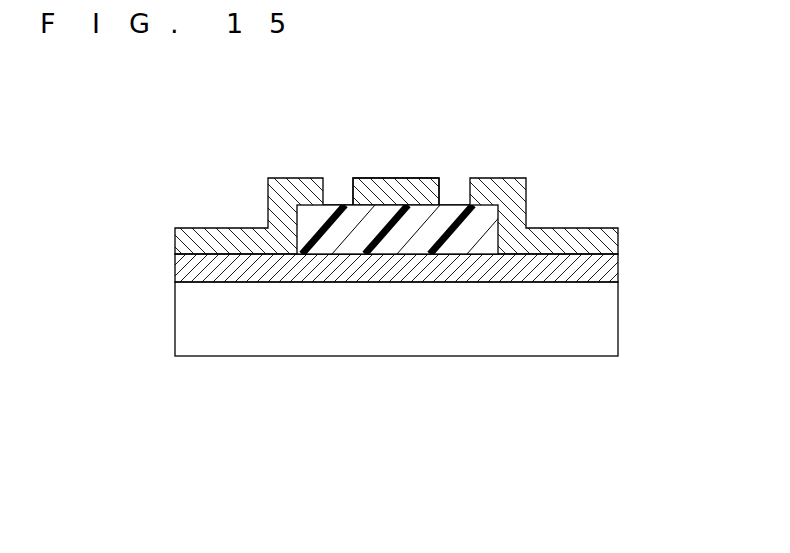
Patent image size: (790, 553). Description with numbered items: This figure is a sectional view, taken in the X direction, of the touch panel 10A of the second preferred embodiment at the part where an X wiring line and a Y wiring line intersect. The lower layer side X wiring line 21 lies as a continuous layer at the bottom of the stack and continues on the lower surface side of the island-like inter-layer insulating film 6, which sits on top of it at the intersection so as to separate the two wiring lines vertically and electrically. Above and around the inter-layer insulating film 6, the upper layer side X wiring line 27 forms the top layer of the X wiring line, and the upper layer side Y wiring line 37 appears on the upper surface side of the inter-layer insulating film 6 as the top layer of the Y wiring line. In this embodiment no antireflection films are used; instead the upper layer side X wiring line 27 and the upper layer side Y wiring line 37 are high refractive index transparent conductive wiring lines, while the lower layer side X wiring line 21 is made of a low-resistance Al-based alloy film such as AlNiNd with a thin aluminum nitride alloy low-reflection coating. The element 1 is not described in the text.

The substrate 1 is at (605, 324).
The lower layer side X wiring line 21 is at (612, 279).
The upper layer side X wiring line 27 is at (620, 236).
The upper layer side Y wiring line 37 is at (400, 188).
The inter-layer insulating film 6 is at (336, 245).
The touch panel 10A is at (611, 146).